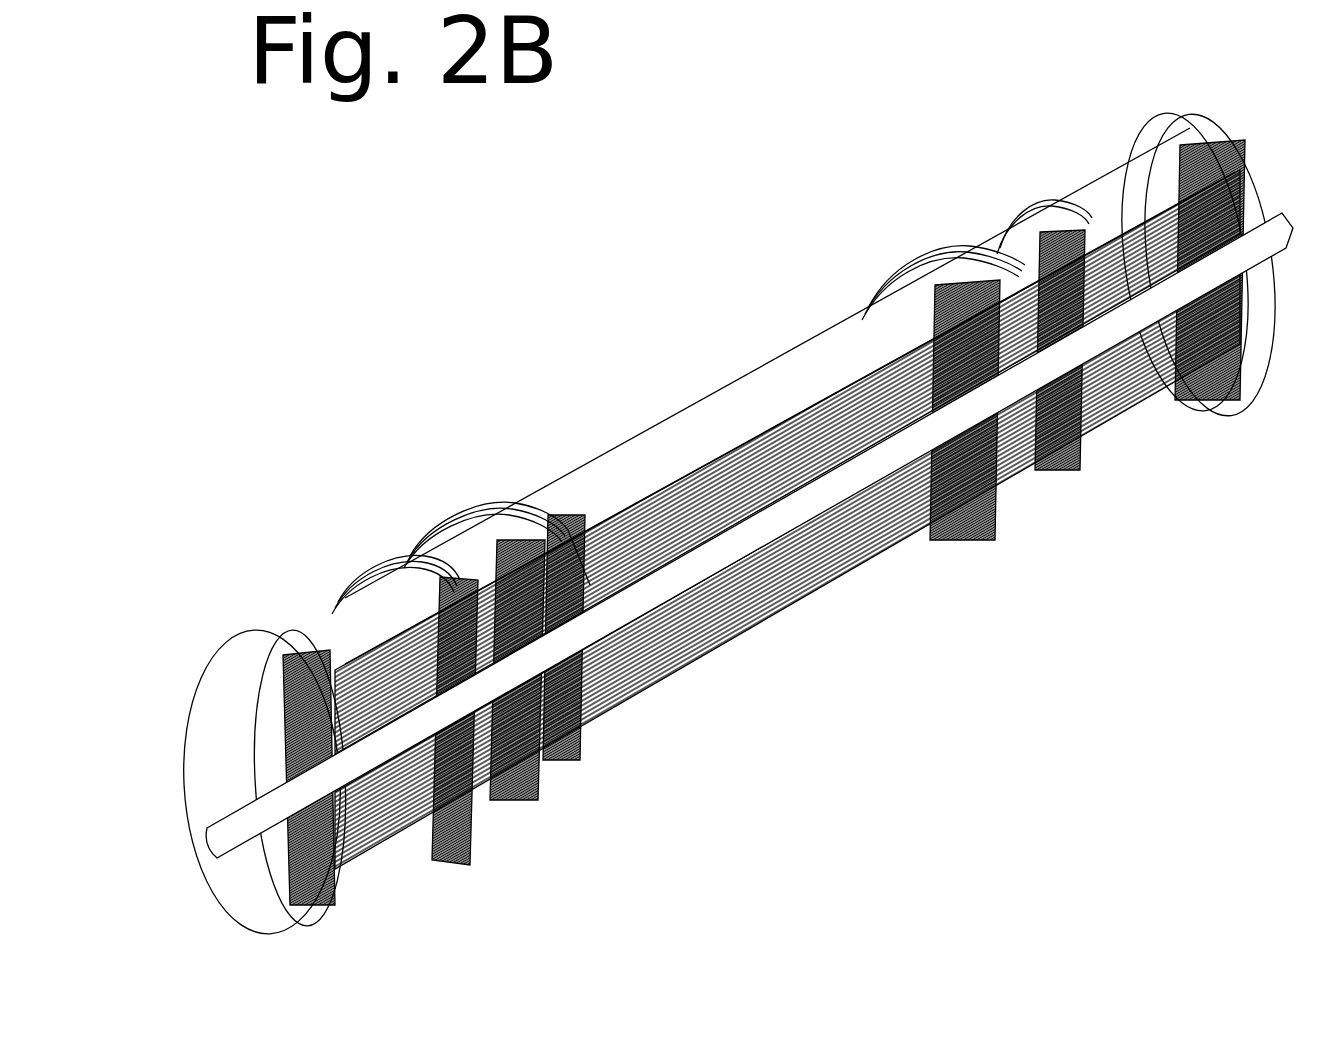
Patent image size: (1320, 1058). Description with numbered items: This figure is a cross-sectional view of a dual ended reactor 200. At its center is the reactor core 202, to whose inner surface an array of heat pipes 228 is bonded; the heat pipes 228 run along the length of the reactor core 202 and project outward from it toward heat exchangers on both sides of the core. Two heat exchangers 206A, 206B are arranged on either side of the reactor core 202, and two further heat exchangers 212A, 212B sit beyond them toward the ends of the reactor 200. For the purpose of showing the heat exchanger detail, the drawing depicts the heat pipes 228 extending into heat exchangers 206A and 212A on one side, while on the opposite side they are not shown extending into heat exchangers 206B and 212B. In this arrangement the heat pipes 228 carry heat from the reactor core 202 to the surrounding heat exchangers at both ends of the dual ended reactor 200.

The dual ended reactor 200 is at (245, 376).
The reactor core 202 is at (710, 405).
The heat exchanger 206A is at (920, 250).
The heat exchanger 206B is at (455, 530).
The heat exchanger 212A is at (1115, 185).
The heat exchanger 212B is at (345, 635).
The heat pipes 228 is at (832, 600).